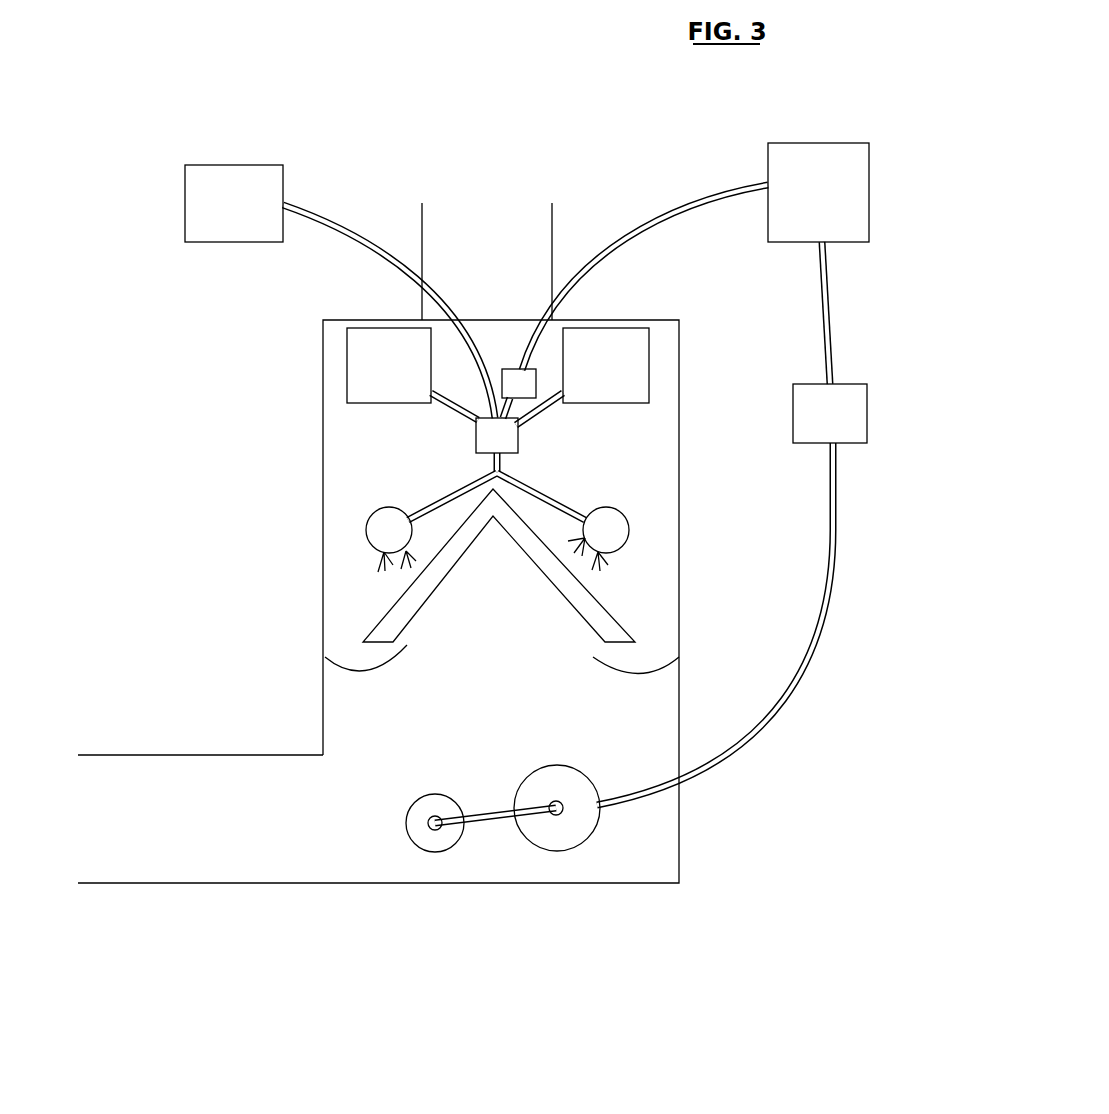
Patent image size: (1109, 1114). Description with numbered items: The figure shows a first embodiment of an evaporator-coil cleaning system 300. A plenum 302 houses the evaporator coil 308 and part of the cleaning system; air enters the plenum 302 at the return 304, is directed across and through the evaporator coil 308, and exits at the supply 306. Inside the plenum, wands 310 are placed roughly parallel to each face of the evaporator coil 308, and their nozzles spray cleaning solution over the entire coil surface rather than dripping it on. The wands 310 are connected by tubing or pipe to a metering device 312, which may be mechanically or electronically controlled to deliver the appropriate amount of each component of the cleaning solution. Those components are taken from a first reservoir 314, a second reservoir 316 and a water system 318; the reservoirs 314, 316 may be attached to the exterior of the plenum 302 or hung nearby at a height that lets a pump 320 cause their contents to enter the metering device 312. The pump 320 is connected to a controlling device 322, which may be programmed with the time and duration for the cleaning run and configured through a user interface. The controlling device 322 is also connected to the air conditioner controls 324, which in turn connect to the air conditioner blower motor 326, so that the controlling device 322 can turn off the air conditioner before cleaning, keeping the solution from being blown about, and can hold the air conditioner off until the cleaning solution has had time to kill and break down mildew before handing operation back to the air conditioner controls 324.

The system 300 is at (380, 971).
The plenum 302 is at (318, 503).
The return 304 is at (93, 812).
The supply 306 is at (480, 175).
The evaporator coil 308 is at (610, 600).
The wands 310 is at (366, 530).
The metering device 312 is at (518, 433).
The first reservoir 314 is at (365, 322).
The second reservoir 316 is at (636, 326).
The water system 318 is at (221, 163).
The pump 320 is at (507, 366).
The controlling device 322 is at (873, 181).
The air conditioner controls 324 is at (868, 406).
The air conditioner blower motor 326 is at (600, 818).